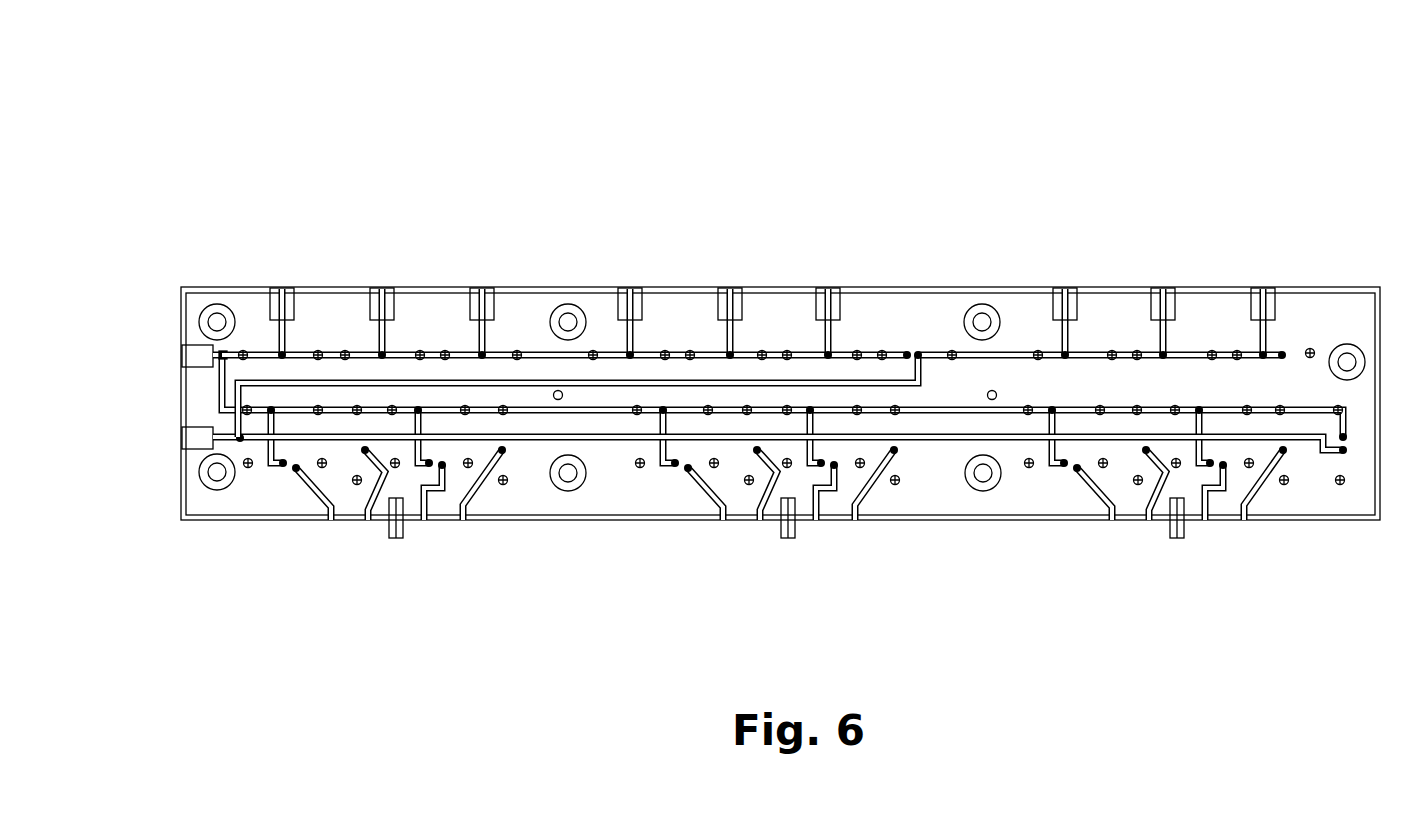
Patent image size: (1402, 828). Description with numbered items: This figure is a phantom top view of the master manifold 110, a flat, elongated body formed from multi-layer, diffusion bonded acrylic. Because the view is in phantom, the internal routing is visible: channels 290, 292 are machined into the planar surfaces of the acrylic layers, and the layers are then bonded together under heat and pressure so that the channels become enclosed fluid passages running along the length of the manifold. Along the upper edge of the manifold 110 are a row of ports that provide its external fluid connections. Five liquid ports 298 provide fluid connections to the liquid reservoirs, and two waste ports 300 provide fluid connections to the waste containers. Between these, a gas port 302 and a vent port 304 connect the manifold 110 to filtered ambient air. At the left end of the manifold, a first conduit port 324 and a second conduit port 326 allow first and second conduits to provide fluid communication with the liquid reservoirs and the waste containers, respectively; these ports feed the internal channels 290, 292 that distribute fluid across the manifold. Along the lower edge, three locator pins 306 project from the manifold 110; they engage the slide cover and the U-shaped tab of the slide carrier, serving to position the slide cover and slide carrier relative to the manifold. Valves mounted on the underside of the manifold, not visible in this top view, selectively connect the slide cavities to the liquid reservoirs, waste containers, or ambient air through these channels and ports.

The master manifold 110 is at (1272, 150).
The channel 290 is at (900, 350).
The channel 292 is at (1013, 352).
The liquid port 298 is at (287, 290).
The waste port 300 is at (1172, 290).
The gas port 302 is at (830, 289).
The vent port 304 is at (1078, 290).
The locator pin 306 is at (396, 540).
The first conduit port 324 is at (185, 353).
The second conduit port 326 is at (183, 435).